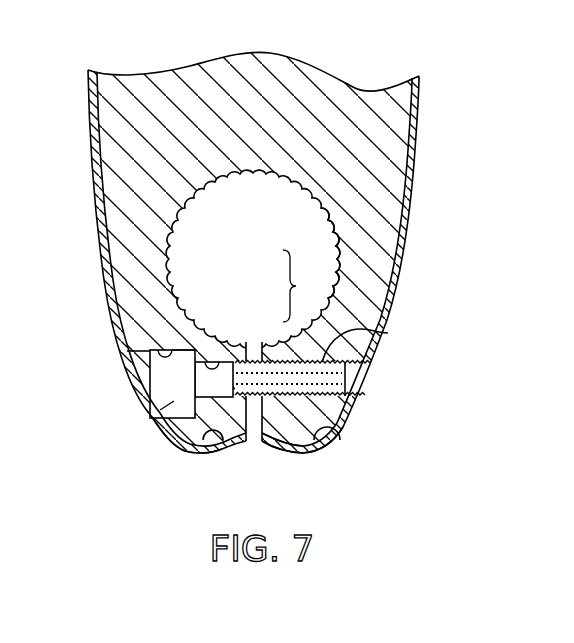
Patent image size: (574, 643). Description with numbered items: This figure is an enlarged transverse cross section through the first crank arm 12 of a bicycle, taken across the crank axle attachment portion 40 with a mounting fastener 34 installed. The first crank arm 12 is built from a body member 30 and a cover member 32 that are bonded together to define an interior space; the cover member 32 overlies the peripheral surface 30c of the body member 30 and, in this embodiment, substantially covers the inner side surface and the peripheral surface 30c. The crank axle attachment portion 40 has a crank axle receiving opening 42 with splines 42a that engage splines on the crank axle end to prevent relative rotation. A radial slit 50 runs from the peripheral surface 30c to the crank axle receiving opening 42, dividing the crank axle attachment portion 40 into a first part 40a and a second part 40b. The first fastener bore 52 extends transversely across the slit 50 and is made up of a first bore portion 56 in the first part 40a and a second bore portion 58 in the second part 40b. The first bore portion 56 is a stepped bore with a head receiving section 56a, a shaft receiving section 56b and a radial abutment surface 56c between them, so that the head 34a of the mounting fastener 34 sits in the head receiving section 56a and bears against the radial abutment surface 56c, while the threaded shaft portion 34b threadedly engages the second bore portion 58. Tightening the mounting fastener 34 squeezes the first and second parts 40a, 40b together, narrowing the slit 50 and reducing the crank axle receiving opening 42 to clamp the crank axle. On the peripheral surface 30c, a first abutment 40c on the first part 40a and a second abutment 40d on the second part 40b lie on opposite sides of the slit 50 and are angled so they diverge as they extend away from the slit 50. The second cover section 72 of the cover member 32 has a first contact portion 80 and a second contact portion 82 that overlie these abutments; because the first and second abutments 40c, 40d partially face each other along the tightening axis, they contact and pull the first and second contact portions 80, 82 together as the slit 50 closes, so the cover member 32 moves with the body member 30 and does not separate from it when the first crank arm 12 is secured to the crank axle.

The first crank arm 12 is at (459, 66).
The body member 30 is at (318, 70).
The peripheral surface 30c is at (412, 156).
The cover member 32 is at (430, 118).
The mounting fastener 34 is at (137, 393).
The head 34a is at (173, 402).
The threaded shaft portion 34b is at (388, 333).
The crank axle attachment portion 40 is at (153, 128).
The first part 40a is at (163, 438).
The second part 40b is at (313, 413).
The first abutment 40c is at (242, 443).
The second abutment 40d is at (267, 452).
The crank axle receiving opening 42 is at (205, 221).
The splines 42a is at (372, 268).
The slit 50 is at (257, 455).
The first fastener bore 52 is at (133, 364).
The first bore portion 56 is at (304, 286).
The head receiving section 56a is at (168, 354).
The shaft receiving section 56b is at (212, 365).
The radial abutment surface 56c is at (179, 351).
The second bore portion 58 is at (347, 377).
The second cover section 72 is at (416, 198).
The first contact portion 80 is at (197, 447).
The second contact portion 82 is at (315, 450).